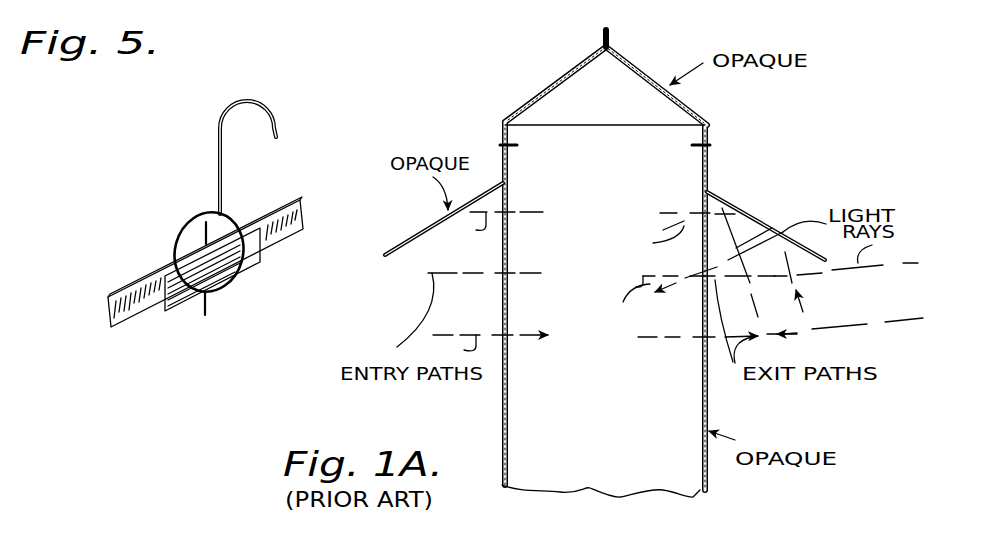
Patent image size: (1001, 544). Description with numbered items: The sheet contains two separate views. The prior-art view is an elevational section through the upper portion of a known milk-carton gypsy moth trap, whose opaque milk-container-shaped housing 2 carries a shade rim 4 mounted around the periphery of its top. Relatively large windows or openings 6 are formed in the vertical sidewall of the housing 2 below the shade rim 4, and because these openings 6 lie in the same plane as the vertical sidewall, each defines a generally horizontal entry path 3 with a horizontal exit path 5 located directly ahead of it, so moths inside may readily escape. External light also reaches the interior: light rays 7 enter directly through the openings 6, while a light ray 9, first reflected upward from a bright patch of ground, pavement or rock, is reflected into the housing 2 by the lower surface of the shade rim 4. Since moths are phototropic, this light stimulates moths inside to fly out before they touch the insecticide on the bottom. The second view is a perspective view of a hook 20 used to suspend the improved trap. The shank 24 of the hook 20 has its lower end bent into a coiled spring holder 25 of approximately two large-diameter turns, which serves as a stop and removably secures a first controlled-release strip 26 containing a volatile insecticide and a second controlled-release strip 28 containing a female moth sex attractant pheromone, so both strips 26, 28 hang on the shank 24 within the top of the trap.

In FIG. 5, the hook 20 is at (279, 123).
In FIG. 5, the shank 24 is at (218, 157).
In FIG. 5, the coiled spring holder 25 is at (184, 233).
In FIG. 5, the first controlled-release strip 26 is at (122, 290).
In FIG. 5, the second controlled-release strip 28 is at (185, 304).
In FIG. 1A, the housing 2 is at (707, 467).
In FIG. 1A, the entry path 3 is at (430, 273).
In FIG. 1A, the shade rim 4 is at (405, 237).
In FIG. 1A, the exit path 5 is at (668, 212).
In FIG. 1A, the openings 6 is at (508, 205).
In FIG. 1A, the light rays 7 is at (860, 323).
In FIG. 1A, the light ray 9 is at (700, 272).